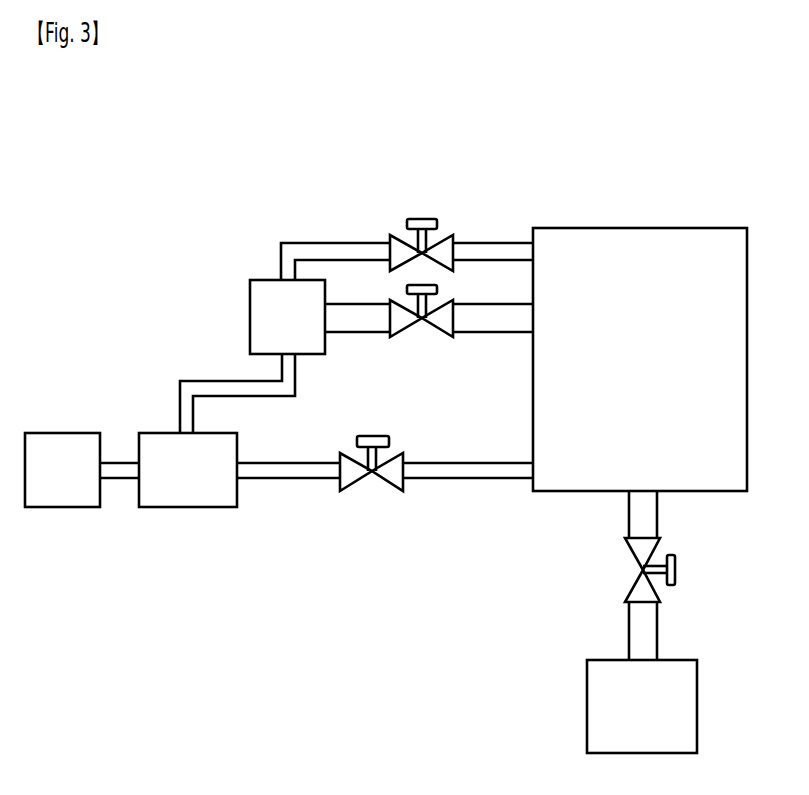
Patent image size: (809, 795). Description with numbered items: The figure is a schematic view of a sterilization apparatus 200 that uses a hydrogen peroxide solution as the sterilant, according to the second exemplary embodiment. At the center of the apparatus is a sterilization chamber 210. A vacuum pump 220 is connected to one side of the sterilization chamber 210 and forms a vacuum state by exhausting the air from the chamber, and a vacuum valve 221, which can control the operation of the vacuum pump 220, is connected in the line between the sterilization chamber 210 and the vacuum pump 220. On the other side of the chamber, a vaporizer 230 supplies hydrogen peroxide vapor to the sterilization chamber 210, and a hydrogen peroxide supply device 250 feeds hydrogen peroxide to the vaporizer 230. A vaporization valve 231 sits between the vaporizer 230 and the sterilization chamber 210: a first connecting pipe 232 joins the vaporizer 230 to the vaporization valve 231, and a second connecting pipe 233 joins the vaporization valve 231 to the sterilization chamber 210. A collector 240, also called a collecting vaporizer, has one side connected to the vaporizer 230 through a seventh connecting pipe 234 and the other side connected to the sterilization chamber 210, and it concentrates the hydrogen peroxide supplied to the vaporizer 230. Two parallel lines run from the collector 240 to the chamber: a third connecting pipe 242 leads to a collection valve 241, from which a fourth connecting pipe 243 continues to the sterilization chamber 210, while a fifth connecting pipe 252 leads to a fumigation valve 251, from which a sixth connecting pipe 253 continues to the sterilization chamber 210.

The sterilization apparatus 200 is at (715, 142).
The sterilization chamber 210 is at (640, 359).
The vacuum pump 220 is at (642, 677).
The vacuum valve 221 is at (695, 562).
The vaporizer 230 is at (188, 470).
The vaporization valve 231 is at (377, 517).
The first connecting pipe 232 is at (293, 472).
The second connecting pipe 233 is at (451, 472).
The seventh connecting pipe 234 is at (216, 388).
The collector 240 is at (287, 317).
The collection valve 241 is at (433, 197).
The third connecting pipe 242 is at (325, 243).
The fourth connecting pipe 243 is at (493, 243).
The hydrogen peroxide supply device 250 is at (82, 470).
The fumigation valve 251 is at (436, 354).
The fifth connecting pipe 252 is at (368, 333).
The sixth connecting pipe 253 is at (475, 333).